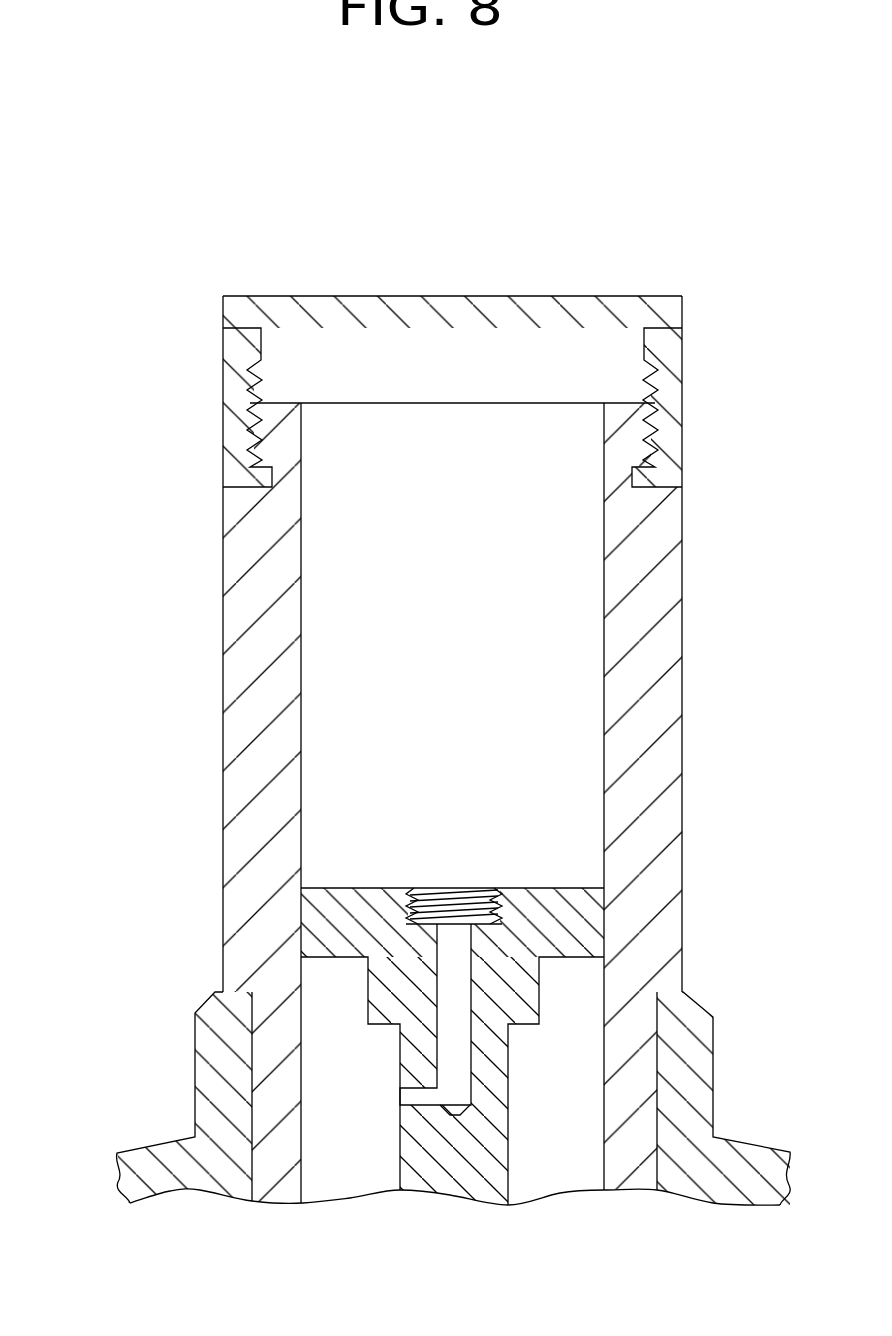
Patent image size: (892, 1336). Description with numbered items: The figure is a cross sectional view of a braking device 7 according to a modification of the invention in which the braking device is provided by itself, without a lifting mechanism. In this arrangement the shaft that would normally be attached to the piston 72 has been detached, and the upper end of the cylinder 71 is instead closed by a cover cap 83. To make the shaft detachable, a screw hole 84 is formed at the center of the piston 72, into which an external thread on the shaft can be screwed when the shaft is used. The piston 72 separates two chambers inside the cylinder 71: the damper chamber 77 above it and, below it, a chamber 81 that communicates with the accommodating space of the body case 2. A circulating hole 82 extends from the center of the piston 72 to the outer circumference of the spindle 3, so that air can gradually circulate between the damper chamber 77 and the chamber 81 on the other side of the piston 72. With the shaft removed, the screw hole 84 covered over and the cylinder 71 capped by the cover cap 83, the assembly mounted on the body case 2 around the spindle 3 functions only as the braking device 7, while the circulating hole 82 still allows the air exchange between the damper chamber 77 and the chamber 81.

The body case 2 is at (133, 1180).
The spindle 3 is at (462, 1182).
The braking device 7 is at (466, 708).
The cylinder 71 is at (670, 756).
The piston 72 is at (592, 918).
The damper chamber 77 is at (327, 615).
The chamber 81 is at (352, 1188).
The circulating hole 82 is at (447, 1052).
The cover cap 83 is at (360, 308).
The screw hole 84 is at (477, 889).